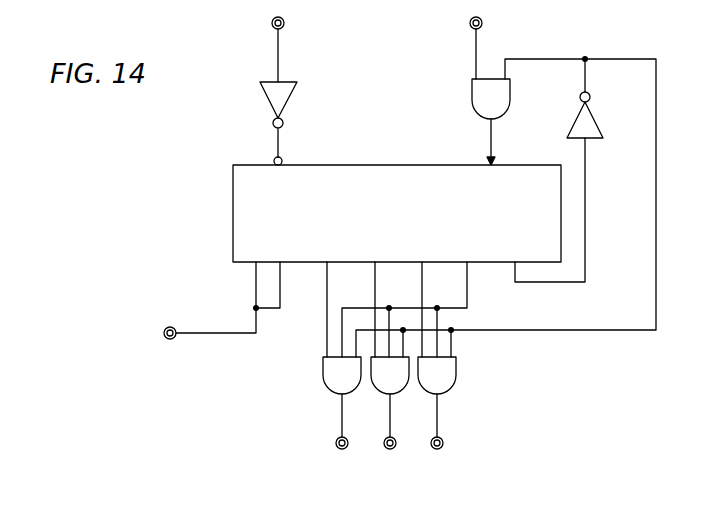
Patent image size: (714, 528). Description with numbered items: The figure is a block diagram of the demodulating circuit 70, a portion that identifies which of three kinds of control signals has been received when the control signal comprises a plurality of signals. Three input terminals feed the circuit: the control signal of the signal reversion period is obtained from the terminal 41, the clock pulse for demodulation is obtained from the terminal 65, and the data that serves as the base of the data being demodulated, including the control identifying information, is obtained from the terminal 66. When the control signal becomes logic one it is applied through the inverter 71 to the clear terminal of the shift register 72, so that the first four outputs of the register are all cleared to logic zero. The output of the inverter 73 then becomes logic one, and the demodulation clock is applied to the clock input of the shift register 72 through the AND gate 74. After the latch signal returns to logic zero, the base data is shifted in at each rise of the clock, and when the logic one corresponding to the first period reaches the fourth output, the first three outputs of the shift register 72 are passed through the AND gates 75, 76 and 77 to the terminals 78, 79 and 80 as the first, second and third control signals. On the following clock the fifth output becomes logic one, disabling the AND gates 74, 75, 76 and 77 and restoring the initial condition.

The terminal 41 is at (285, 24).
The terminal 65 is at (469, 24).
The terminal 66 is at (173, 327).
The demodulating circuit 70 is at (223, 128).
The inverter 71 is at (287, 100).
The shift register 72 is at (404, 165).
The inverter 73 is at (596, 125).
The AND gate 74 is at (506, 108).
The AND gate 75 is at (330, 379).
The AND gate 76 is at (385, 380).
The AND gate 77 is at (427, 382).
The terminal 78 is at (335, 441).
The terminal 79 is at (384, 440).
The terminal 80 is at (431, 440).